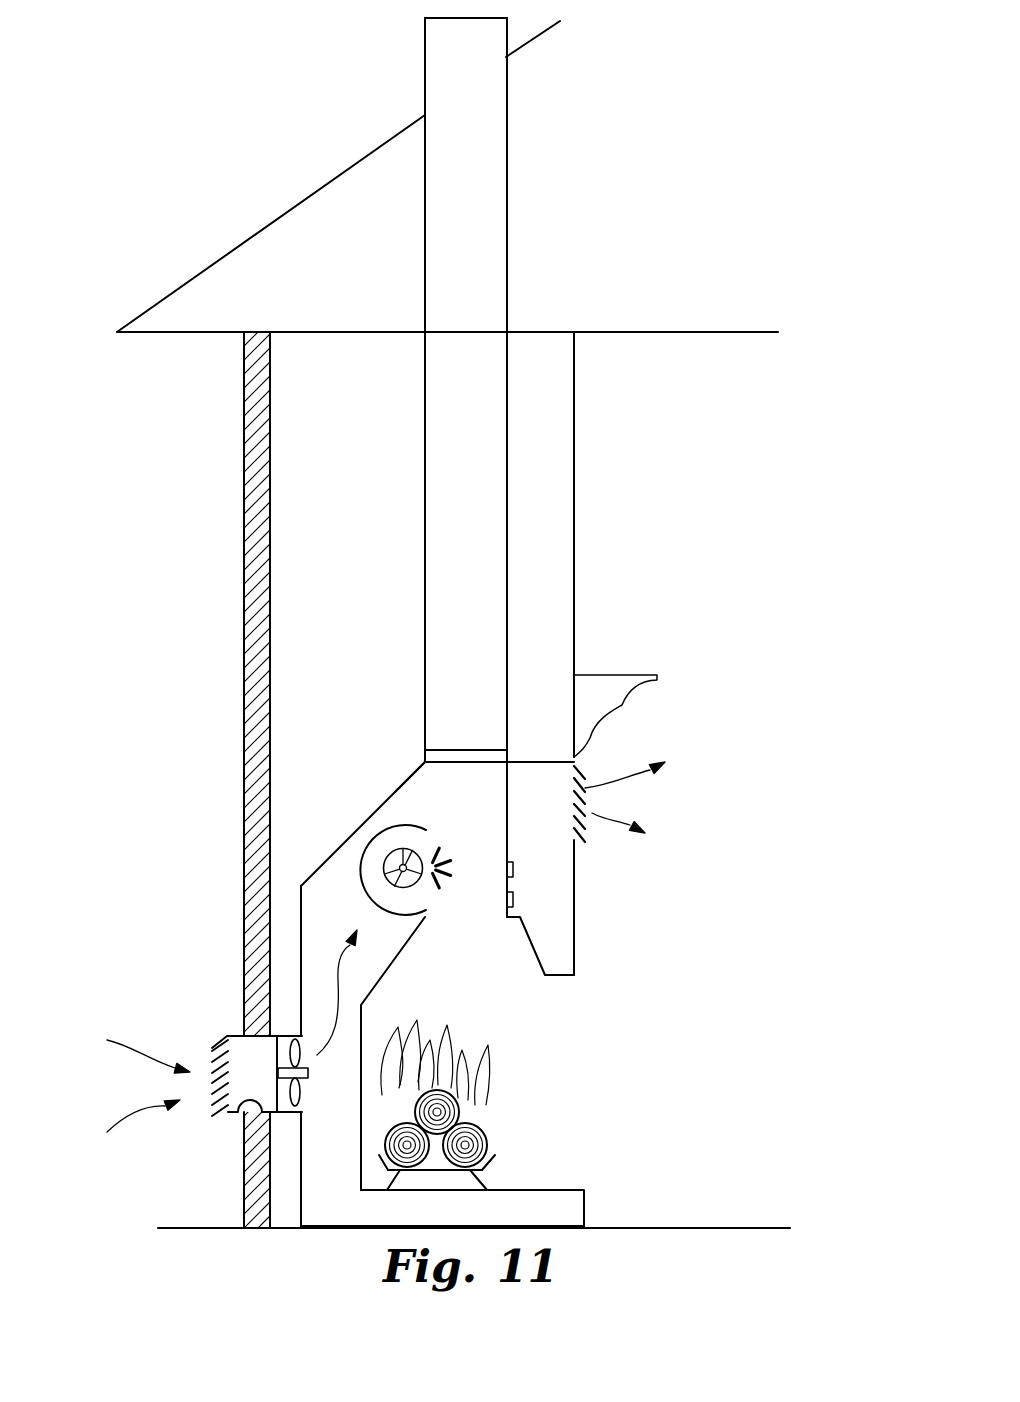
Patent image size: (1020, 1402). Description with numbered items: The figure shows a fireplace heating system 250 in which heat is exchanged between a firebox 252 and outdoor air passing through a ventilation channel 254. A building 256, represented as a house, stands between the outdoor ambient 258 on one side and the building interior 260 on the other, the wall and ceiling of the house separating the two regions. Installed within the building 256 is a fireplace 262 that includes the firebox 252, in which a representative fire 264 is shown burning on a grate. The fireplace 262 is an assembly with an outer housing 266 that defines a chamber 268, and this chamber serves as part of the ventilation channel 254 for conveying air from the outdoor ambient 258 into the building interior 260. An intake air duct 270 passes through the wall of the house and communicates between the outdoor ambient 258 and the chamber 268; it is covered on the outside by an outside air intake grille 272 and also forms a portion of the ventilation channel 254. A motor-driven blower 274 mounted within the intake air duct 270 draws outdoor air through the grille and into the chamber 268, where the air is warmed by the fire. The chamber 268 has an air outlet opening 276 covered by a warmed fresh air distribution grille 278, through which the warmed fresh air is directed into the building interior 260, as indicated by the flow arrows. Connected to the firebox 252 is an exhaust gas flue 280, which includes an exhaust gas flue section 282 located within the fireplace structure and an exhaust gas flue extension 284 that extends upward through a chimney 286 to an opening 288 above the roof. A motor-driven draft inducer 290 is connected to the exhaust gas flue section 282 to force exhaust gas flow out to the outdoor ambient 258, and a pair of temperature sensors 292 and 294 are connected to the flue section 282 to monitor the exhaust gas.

The system 250 is at (718, 704).
The firebox 252 is at (520, 1036).
The ventilation channel 254 is at (312, 696).
The building 256 is at (253, 388).
The outdoor ambient 258 is at (205, 618).
The building interior 260 is at (760, 590).
The fireplace 262 is at (598, 1005).
The fire 264 is at (492, 1102).
The outer housing 266 is at (352, 836).
The chamber 268 is at (332, 899).
The intake air duct 270 is at (228, 1117).
The outside air intake grille 272 is at (210, 1049).
The motor-driven blower 274 is at (305, 1076).
The air outlet opening 276 is at (585, 840).
The warmed fresh air distribution grille 278 is at (585, 805).
The exhaust gas flue 280 is at (520, 640).
The exhaust gas flue section 282 is at (425, 797).
The exhaust gas flue extension 284 is at (425, 540).
The chimney 286 is at (590, 458).
The opening 288 is at (506, 34).
The motor-driven draft inducer 290 is at (448, 846).
The temperature sensor 292 is at (514, 900).
The temperature sensor 294 is at (514, 870).